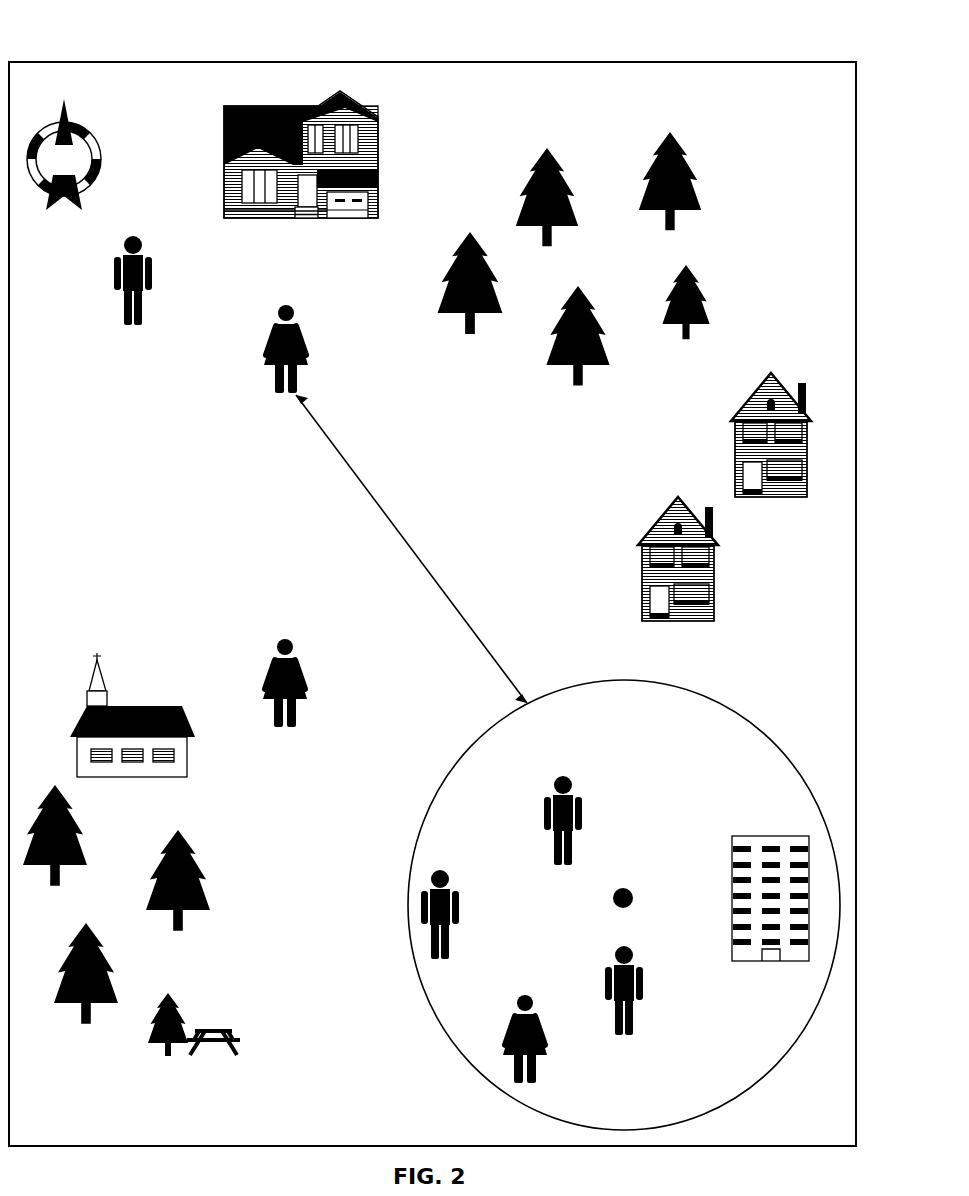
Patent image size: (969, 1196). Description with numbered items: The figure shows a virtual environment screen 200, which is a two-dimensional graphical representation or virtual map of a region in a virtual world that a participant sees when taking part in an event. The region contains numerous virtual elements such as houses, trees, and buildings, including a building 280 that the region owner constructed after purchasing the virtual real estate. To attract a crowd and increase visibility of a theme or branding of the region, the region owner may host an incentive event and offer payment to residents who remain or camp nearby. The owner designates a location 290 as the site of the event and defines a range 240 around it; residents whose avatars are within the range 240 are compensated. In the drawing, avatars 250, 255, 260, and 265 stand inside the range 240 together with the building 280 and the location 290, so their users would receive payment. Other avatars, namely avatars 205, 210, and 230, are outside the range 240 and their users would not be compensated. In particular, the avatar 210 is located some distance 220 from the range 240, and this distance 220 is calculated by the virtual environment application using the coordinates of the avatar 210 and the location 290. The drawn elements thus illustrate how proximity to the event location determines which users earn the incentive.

The virtual environment screen 200 is at (160, 62).
The avatar 205 is at (115, 277).
The avatar 210 is at (285, 307).
The distance 220 is at (410, 542).
The avatar 230 is at (280, 647).
The range 240 is at (447, 775).
The avatar 250 is at (543, 797).
The avatar 255 is at (618, 953).
The avatar 260 is at (452, 932).
The avatar 265 is at (535, 1063).
The building 280 is at (777, 834).
The location 290 is at (635, 905).